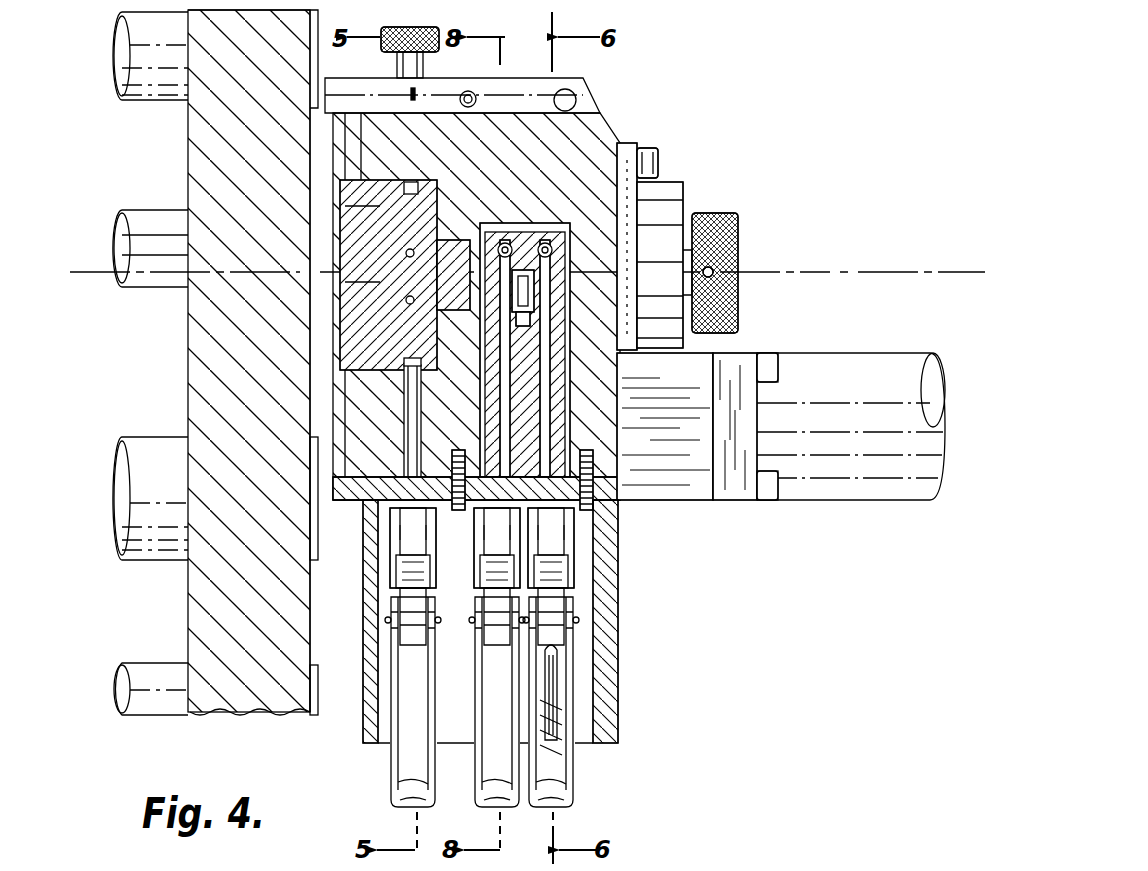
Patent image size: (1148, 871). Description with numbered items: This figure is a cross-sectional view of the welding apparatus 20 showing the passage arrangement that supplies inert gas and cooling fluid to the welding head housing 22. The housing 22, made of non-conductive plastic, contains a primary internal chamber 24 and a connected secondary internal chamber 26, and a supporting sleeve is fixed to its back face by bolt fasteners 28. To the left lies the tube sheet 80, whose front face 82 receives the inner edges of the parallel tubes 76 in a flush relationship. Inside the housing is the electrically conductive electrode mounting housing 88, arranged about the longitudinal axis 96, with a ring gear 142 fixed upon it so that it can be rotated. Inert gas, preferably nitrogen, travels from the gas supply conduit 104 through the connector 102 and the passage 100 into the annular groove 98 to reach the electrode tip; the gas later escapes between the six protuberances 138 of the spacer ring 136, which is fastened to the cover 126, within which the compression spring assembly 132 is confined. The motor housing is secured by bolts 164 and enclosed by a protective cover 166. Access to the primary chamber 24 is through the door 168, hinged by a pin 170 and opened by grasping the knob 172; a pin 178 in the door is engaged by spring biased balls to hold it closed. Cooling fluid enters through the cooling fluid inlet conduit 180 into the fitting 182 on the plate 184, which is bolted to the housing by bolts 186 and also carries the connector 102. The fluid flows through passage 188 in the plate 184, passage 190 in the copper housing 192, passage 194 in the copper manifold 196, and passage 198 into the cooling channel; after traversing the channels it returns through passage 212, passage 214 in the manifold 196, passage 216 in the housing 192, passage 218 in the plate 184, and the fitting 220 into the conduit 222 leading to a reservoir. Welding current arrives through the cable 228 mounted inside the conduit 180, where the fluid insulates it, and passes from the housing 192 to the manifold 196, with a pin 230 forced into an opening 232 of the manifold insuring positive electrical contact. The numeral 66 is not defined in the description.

The welding apparatus 20 is at (835, 105).
The welding head housing 22 is at (617, 289).
The primary internal chamber 24 is at (370, 162).
The secondary internal chamber 26 is at (620, 250).
The bolt fasteners 28 is at (656, 165).
The support arm 66 is at (660, 185).
The tube 76 is at (179, 550).
The tube sheet 80 is at (212, 603).
The front face 82 is at (330, 623).
The electrode mounting housing 88 is at (350, 235).
The longitudinal axis 96 is at (920, 272).
The annular groove 98 is at (370, 140).
The passage 100 is at (330, 445).
The connector 102 is at (402, 530).
The gas supply conduit 104 is at (400, 790).
The cover 126 is at (345, 130).
The compression spring assembly 132 is at (360, 200).
The spacer ring 136 is at (440, 395).
The protuberances 138 is at (440, 372).
The ring gear 142 is at (360, 260).
The bolts 164 is at (768, 358).
The protective cover 166 is at (877, 503).
The door 168 is at (437, 100).
The pin 170 is at (572, 94).
The knob 172 is at (437, 40).
The pin 178 is at (478, 97).
The cooling fluid inlet conduit 180 is at (566, 780).
The fitting 182 is at (592, 540).
The plate 184 is at (617, 520).
The bolts 186 is at (400, 548).
The passage 188 is at (617, 468).
The passage 190 is at (617, 448).
The copper housing 192 is at (617, 425).
The passage 194 is at (617, 360).
The copper manifold 196 is at (633, 145).
The passage 198 is at (640, 225).
The passage 212 is at (525, 232).
The passage 214 is at (440, 320).
The passage 216 is at (410, 437).
The passage 218 is at (486, 510).
The fitting 220 is at (490, 565).
The conduit 222 is at (490, 805).
The cable 228 is at (560, 750).
The pin 230 is at (440, 347).
The opening 232 is at (545, 245).